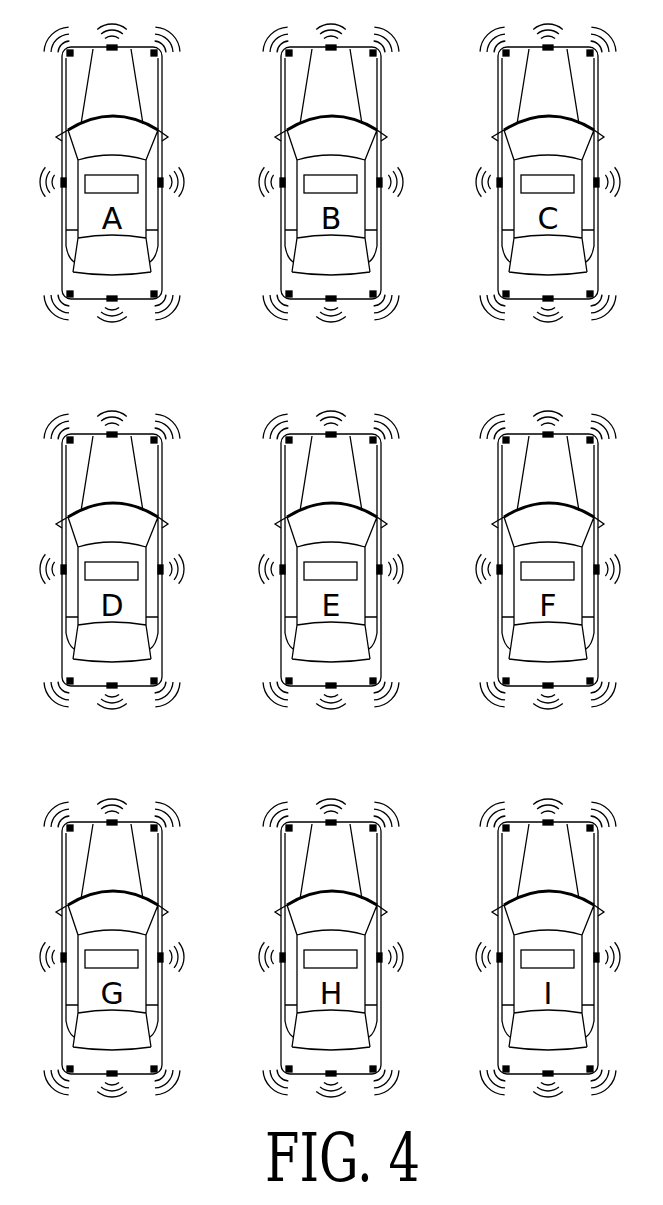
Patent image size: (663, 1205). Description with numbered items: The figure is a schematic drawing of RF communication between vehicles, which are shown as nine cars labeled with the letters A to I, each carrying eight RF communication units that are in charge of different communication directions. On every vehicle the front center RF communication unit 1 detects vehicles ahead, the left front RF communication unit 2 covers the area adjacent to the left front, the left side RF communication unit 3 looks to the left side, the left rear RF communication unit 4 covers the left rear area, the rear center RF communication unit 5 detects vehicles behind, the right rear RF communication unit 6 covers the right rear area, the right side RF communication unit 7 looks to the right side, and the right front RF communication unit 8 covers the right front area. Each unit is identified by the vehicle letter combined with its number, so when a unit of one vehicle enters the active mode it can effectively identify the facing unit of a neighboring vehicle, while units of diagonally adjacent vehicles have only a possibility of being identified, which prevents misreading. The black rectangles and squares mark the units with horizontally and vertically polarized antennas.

The front center RF communication unit 1 is at (330, 439).
The left front RF communication unit 2 is at (282, 441).
The left side RF communication unit 3 is at (279, 570).
The left rear RF communication unit 4 is at (285, 683).
The rear center RF communication unit 5 is at (330, 681).
The right rear RF communication unit 6 is at (375, 683).
The right side RF communication unit 7 is at (380, 570).
The right front RF communication unit 8 is at (377, 441).